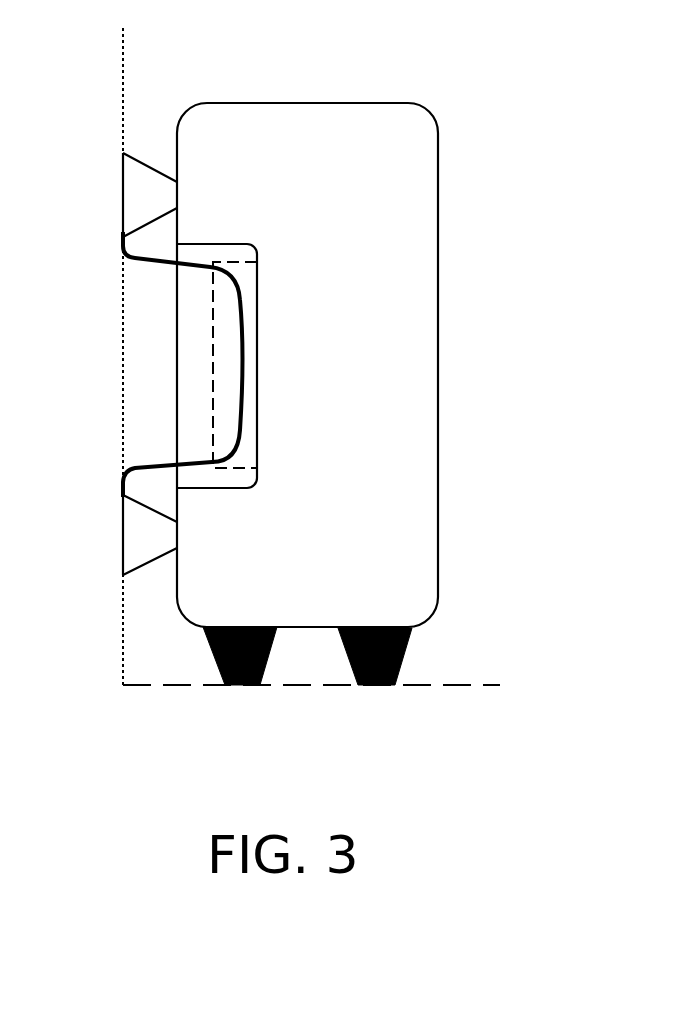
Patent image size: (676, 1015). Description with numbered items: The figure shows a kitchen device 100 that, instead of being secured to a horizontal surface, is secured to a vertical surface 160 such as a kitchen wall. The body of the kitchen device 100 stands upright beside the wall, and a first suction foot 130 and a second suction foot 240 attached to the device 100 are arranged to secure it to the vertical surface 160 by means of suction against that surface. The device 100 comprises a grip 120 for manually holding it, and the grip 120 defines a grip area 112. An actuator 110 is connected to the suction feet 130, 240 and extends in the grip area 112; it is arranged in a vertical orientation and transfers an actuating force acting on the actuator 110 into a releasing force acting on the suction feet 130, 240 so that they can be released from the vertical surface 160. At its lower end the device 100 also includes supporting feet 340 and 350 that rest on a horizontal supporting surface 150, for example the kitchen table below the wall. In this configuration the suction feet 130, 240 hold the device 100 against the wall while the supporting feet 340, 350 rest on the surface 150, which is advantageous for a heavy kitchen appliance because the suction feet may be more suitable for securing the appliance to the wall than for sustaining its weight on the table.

The kitchen device 100 is at (438, 186).
The actuator 110 is at (243, 398).
The grip area 112 is at (235, 262).
The grip 120 is at (258, 298).
The first suction foot 130 is at (135, 194).
The second suction foot 240 is at (135, 535).
The horizontal supporting surface 150 is at (482, 683).
The vertical surface 160 is at (123, 36).
The supporting foot 340 is at (376, 686).
The supporting foot 350 is at (240, 686).